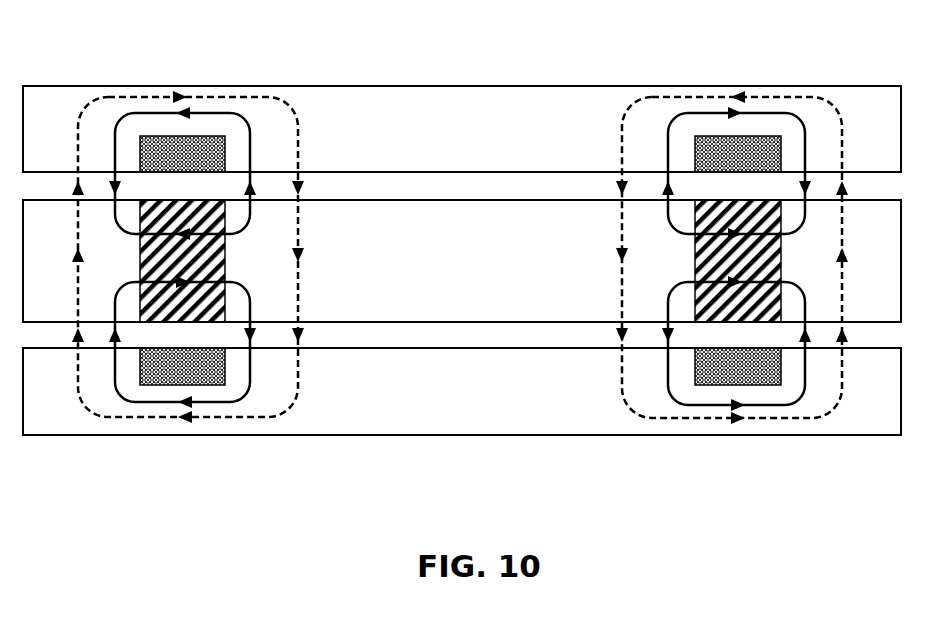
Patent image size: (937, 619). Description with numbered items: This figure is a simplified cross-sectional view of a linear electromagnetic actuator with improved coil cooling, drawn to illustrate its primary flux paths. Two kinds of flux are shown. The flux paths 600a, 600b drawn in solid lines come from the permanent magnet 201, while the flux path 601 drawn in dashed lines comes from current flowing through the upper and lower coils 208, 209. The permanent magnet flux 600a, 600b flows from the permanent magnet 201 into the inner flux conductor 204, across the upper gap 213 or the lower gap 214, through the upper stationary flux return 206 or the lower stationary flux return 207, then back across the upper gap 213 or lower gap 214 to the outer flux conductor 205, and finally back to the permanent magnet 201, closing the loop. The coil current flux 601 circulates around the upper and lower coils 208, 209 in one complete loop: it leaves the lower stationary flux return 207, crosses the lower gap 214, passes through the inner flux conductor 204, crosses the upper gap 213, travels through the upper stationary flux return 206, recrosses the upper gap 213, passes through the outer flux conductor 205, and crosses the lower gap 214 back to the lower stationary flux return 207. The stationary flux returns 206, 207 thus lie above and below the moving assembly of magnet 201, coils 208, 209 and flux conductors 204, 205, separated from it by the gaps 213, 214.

The permanent magnet 201 is at (770, 217).
The inner flux conductor 204 is at (598, 218).
The outer flux conductor 205 is at (50, 213).
The upper stationary flux return 206 is at (468, 103).
The lower stationary flux return 207 is at (513, 408).
The upper coil 208 is at (163, 136).
The lower coil 209 is at (777, 383).
The upper gap 213 is at (340, 180).
The lower gap 214 is at (400, 337).
The flux path 600a is at (250, 110).
The flux path 600b is at (700, 400).
The flux path 601 is at (275, 417).